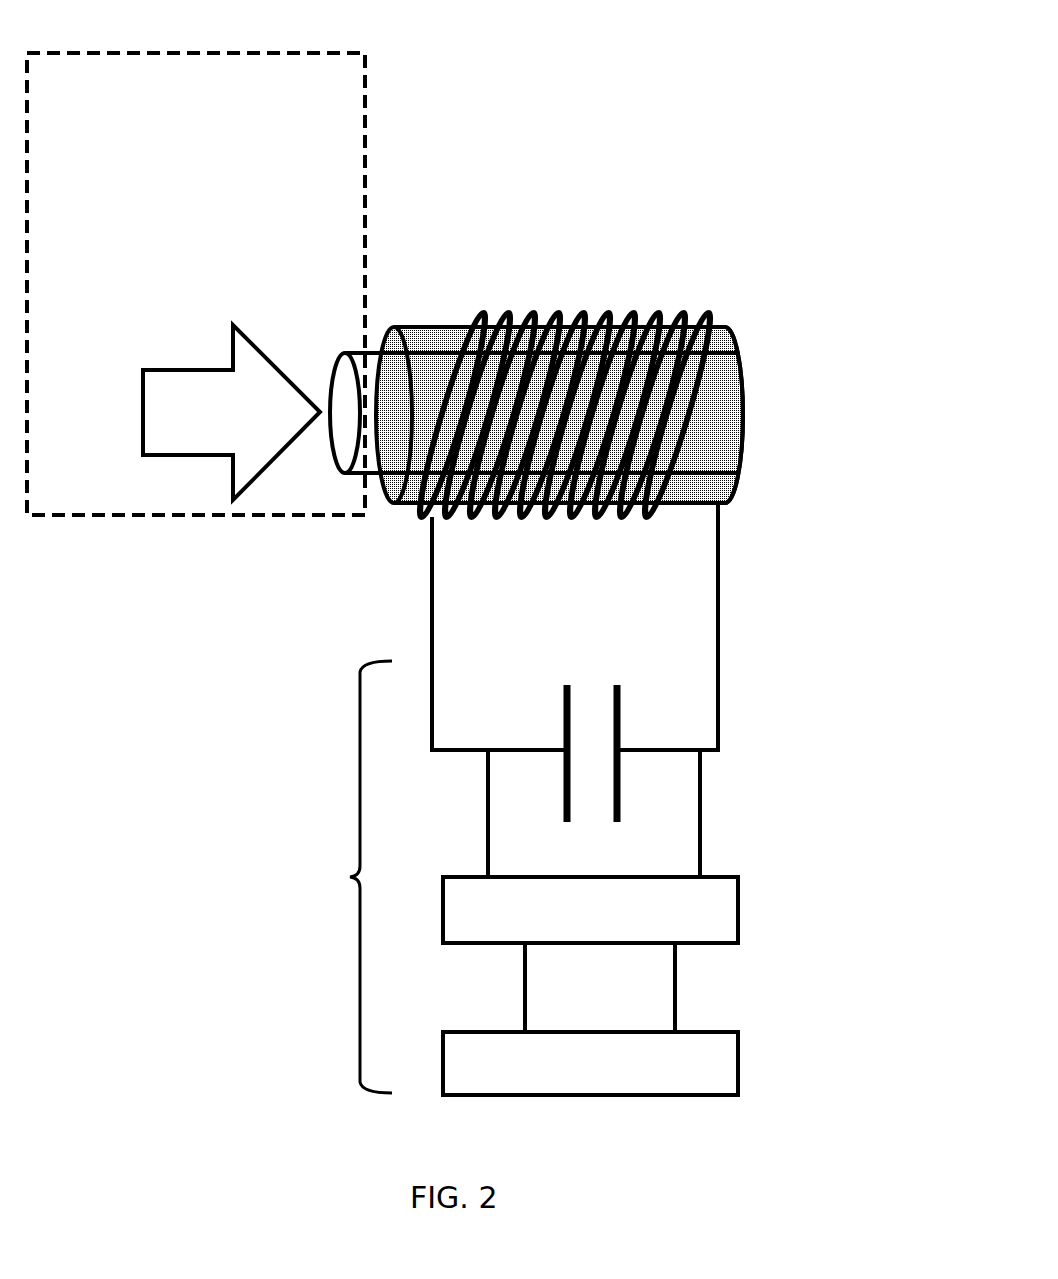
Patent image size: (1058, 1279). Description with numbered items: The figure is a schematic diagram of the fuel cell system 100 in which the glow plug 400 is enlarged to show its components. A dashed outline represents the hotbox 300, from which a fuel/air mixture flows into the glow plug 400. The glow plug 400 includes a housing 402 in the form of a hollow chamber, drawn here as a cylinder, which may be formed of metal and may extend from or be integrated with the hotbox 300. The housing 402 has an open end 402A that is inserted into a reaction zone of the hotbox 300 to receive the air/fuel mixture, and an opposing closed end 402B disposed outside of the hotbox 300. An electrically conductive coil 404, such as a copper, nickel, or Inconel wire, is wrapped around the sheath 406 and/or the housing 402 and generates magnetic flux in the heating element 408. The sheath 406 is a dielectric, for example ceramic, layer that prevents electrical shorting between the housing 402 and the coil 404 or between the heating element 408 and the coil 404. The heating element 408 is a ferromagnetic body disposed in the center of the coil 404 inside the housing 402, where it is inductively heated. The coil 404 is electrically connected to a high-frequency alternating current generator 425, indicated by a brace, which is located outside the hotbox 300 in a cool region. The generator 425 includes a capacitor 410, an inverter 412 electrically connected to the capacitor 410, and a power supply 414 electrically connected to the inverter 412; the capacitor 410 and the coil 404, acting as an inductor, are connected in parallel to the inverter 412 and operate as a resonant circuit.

The fuel cell system 100 is at (630, 95).
The hotbox 300 is at (227, 258).
The glow plug 400 is at (803, 363).
The housing 402 is at (735, 440).
The open end 402A is at (330, 420).
The closed end 402B is at (743, 413).
The electrically conductive coil 404 is at (713, 312).
The sheath 406 is at (720, 492).
The heating element 408 is at (533, 465).
The capacitor 410 is at (570, 693).
The inverter 412 is at (740, 912).
The power supply 414 is at (740, 1063).
The high-frequency alternating current generator 425 is at (351, 877).